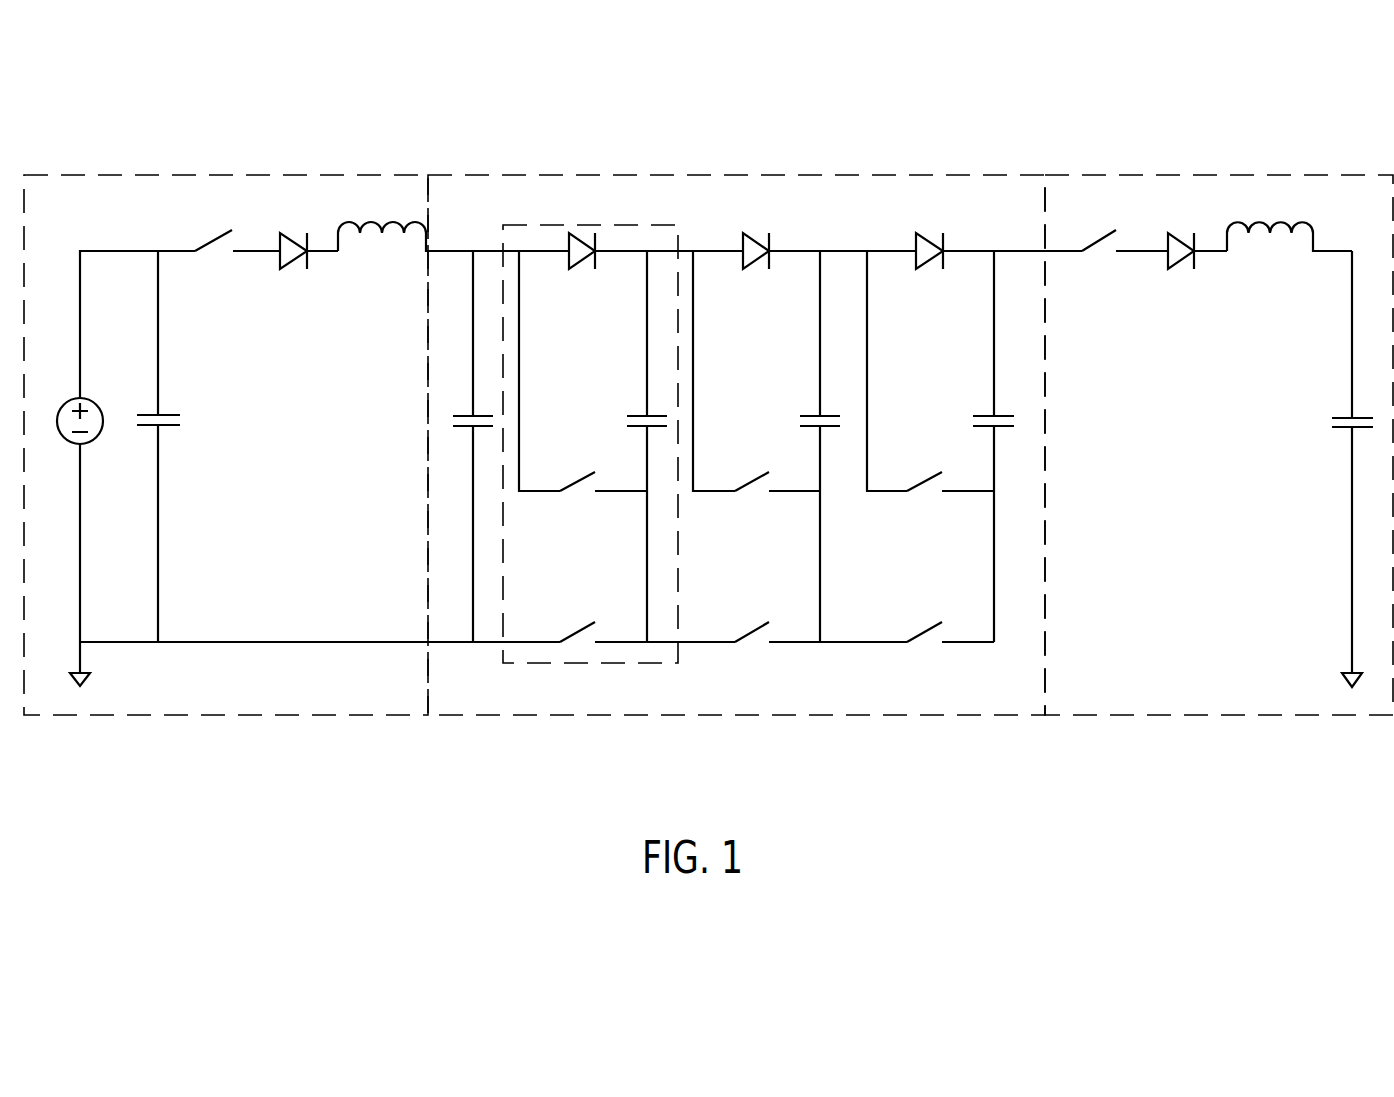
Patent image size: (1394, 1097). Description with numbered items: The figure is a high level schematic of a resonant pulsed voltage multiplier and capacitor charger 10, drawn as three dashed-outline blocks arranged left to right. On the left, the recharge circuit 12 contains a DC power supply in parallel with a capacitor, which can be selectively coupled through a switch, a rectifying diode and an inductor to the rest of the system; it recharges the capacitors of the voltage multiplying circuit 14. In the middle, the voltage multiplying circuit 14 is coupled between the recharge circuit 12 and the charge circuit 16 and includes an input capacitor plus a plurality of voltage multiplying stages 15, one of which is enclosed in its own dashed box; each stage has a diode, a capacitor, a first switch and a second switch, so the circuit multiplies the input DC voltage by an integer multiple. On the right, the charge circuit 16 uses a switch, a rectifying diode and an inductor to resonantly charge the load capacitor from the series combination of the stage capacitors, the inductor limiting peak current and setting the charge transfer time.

The resonant pulsed voltage multiplier and capacitor charger 10 is at (1163, 66).
The recharge circuit 12 is at (362, 174).
The voltage multiplying circuit 14 is at (973, 174).
The voltage multiplying stage 15 is at (610, 224).
The charge circuit 16 is at (1347, 174).